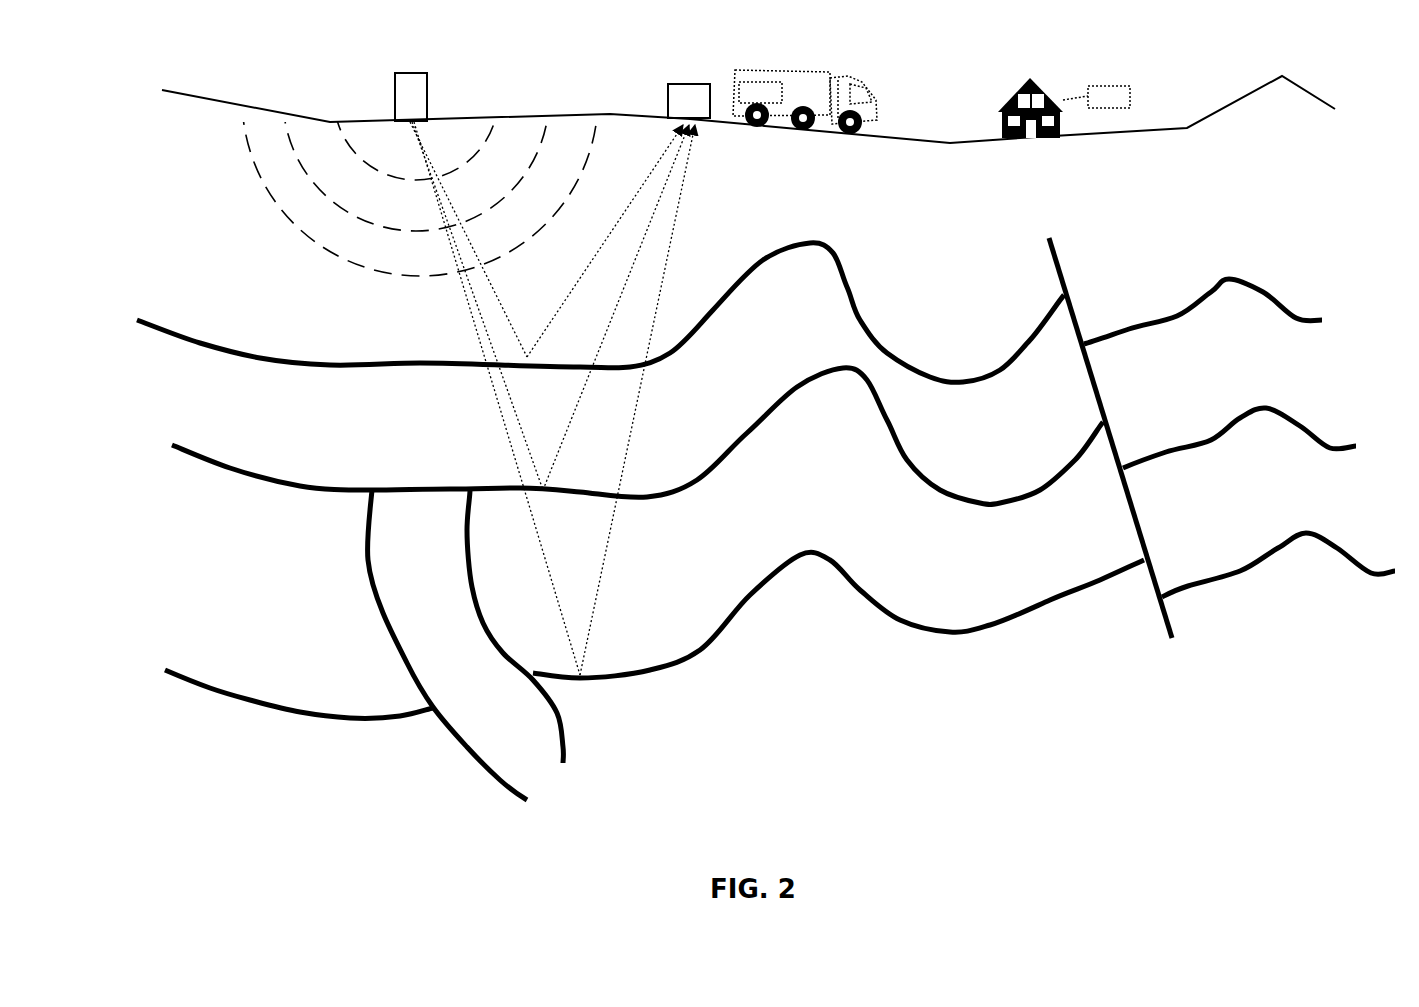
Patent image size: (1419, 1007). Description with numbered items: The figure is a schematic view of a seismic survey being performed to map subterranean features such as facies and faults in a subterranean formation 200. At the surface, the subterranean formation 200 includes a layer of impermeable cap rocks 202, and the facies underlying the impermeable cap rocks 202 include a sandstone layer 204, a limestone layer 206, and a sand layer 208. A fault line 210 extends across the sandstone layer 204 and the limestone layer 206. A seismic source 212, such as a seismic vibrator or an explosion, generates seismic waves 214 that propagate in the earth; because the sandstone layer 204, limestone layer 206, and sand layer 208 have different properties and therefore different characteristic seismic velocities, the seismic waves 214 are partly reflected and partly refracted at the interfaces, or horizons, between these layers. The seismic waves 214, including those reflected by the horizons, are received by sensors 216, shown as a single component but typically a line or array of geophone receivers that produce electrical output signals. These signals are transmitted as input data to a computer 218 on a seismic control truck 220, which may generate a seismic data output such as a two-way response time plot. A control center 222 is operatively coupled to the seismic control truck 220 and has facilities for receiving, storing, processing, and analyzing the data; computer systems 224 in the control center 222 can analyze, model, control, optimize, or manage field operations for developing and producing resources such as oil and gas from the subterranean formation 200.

The subterranean formation 200 is at (1331, 803).
The impermeable cap rocks 202 is at (743, 171).
The sandstone layer 204 is at (746, 374).
The limestone layer 206 is at (780, 606).
The sand layer 208 is at (466, 645).
The fault line 210 is at (1066, 252).
The seismic source 212 is at (437, 92).
The seismic waves 214 is at (334, 264).
The sensors 216 is at (692, 80).
The computer 218 is at (776, 90).
The seismic control truck 220 is at (875, 85).
The control center 222 is at (1041, 72).
The computer systems 224 is at (1112, 97).